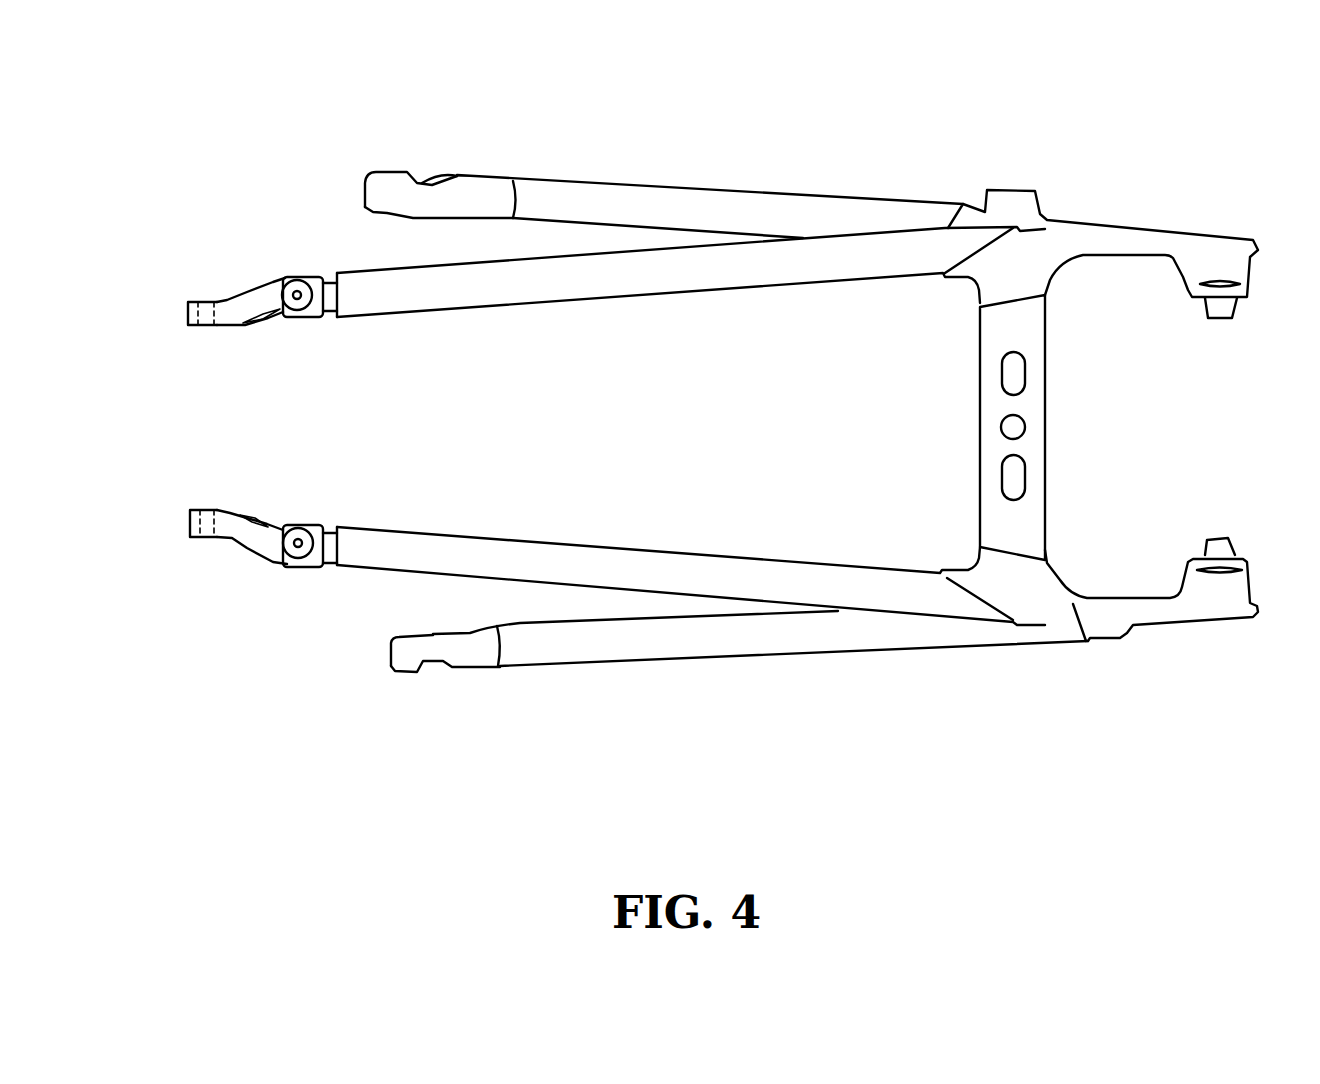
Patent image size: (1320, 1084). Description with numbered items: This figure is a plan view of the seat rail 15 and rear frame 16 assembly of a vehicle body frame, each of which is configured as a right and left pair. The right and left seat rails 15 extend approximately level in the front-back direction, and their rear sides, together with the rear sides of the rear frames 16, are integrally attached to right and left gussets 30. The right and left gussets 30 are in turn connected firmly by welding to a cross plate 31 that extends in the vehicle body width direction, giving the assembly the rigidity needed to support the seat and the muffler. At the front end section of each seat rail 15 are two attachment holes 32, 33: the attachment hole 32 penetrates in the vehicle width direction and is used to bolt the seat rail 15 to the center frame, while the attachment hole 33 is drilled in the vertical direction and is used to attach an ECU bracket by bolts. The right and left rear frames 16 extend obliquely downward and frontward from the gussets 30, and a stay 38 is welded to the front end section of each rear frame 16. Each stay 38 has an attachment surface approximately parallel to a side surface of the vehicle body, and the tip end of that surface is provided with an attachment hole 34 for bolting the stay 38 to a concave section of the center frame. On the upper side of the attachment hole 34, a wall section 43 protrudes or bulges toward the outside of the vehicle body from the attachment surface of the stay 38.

The seat rail 15 is at (702, 270).
The rear frame 16 is at (733, 188).
The gusset 30 is at (1115, 238).
The cross plate 31 is at (1032, 445).
The attachment hole 32 is at (203, 332).
The attachment hole 33 is at (297, 302).
The attachment hole 34 is at (380, 213).
The stay 38 is at (457, 208).
The wall section 43 is at (393, 170).